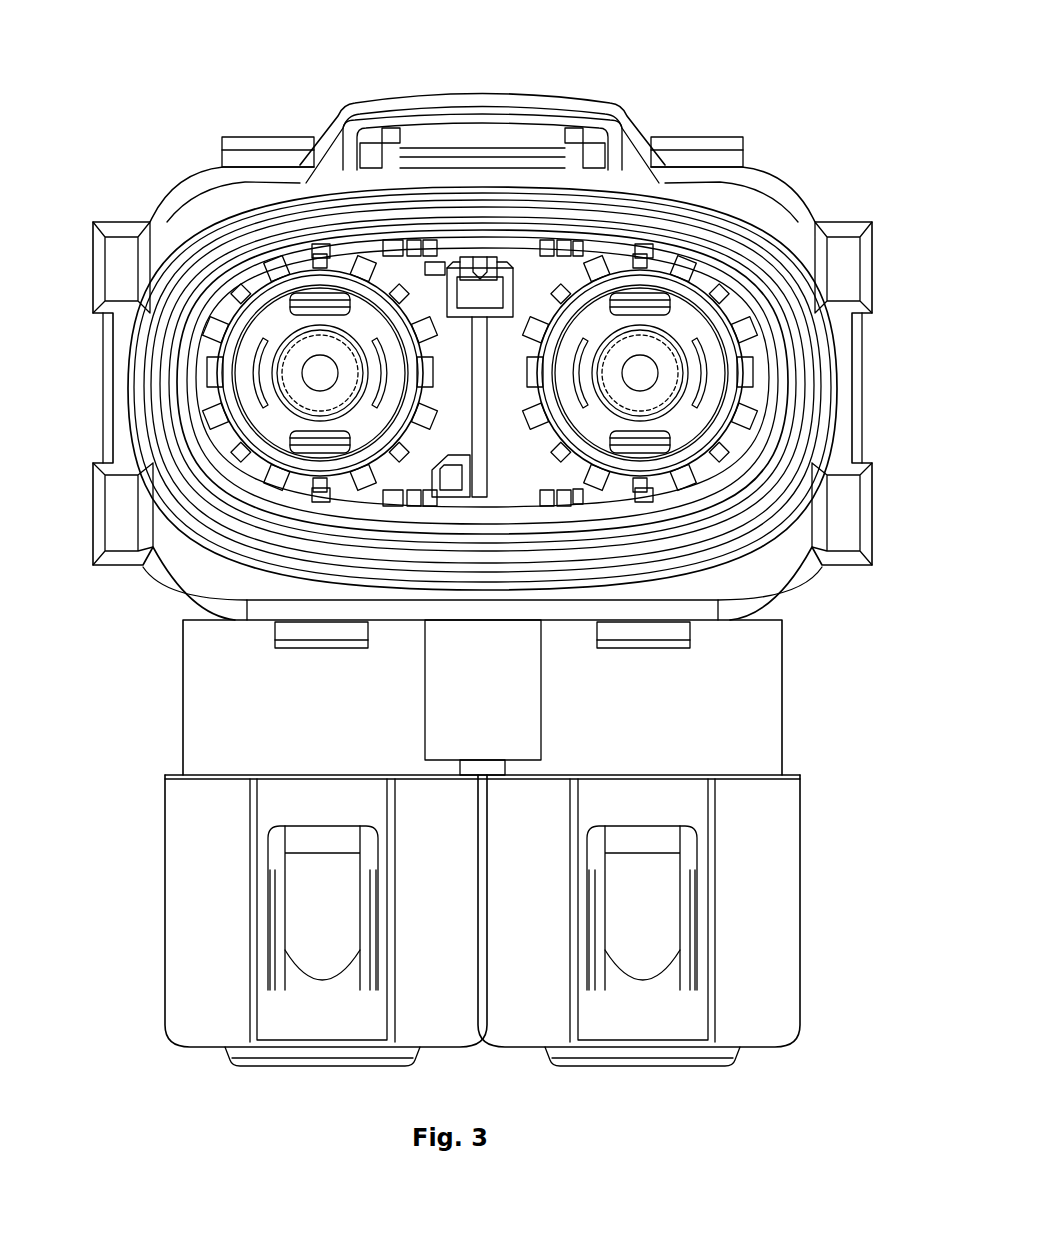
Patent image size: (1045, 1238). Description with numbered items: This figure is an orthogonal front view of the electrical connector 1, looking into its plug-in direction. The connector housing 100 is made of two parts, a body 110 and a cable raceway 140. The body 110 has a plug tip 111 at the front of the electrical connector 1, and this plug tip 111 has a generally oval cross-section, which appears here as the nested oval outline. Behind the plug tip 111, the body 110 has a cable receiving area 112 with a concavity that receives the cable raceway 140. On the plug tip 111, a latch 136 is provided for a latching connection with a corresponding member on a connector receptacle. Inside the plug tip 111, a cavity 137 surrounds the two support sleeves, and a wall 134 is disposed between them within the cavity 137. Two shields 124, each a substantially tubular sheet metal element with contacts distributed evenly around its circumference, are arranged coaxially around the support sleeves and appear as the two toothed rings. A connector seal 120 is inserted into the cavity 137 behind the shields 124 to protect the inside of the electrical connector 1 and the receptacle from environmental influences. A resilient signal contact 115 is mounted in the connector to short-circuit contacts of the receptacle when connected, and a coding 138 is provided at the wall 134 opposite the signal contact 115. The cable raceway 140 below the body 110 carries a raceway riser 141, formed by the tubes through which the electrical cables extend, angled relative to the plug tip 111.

The electrical connector 1 is at (128, 55).
The housing 100 is at (832, 528).
The body 110 is at (206, 212).
The plug tip 111 is at (203, 378).
The cable receiving area 112 is at (772, 196).
The resilient signal contact 115 is at (482, 266).
The connector seal 120 is at (597, 223).
The shield 124 is at (770, 345).
The wall 134 is at (480, 400).
The latch 136 is at (473, 130).
The cavity 137 is at (433, 268).
The coding 138 is at (435, 480).
The cable raceway 140 is at (202, 750).
The raceway riser 141 is at (482, 920).